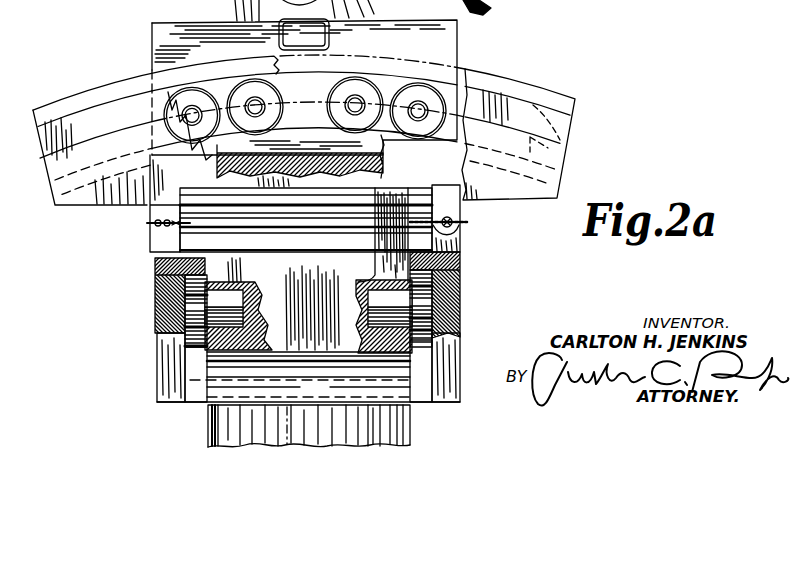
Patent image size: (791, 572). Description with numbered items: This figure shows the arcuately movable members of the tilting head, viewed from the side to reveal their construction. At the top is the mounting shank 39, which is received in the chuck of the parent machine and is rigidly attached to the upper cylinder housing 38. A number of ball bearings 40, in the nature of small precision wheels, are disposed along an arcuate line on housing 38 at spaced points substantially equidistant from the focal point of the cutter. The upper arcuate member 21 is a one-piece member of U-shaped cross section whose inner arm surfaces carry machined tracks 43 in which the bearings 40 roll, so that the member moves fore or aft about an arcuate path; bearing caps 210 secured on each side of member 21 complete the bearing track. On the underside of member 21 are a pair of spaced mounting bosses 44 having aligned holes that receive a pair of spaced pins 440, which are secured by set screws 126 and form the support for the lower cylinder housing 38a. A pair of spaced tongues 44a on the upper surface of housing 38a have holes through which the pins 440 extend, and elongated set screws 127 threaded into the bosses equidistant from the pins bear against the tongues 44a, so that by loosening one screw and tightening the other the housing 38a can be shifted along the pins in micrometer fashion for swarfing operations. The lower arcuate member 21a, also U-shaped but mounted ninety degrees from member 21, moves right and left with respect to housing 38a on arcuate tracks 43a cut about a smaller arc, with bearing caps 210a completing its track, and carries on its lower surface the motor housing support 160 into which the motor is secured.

The mounting shank 39 is at (346, 2).
The ball bearings 40 is at (407, 90).
The upper cylinder housing 38 is at (465, 62).
The bearing caps 210 is at (530, 90).
The upper arcuate member 21 is at (560, 127).
The tracks 43 is at (545, 150).
The pins 440 is at (425, 202).
The tongues 44a is at (352, 200).
The set screws 126 is at (147, 223).
The elongated set screws 127 is at (463, 242).
The mounting bosses 44 is at (146, 250).
The bearing caps of lower member 210a is at (460, 258).
The lower cylinder housing 38a is at (289, 305).
The lower arcuate member 21a is at (460, 305).
The arcuate tracks 43a is at (423, 368).
The motor housing support 160 is at (210, 426).